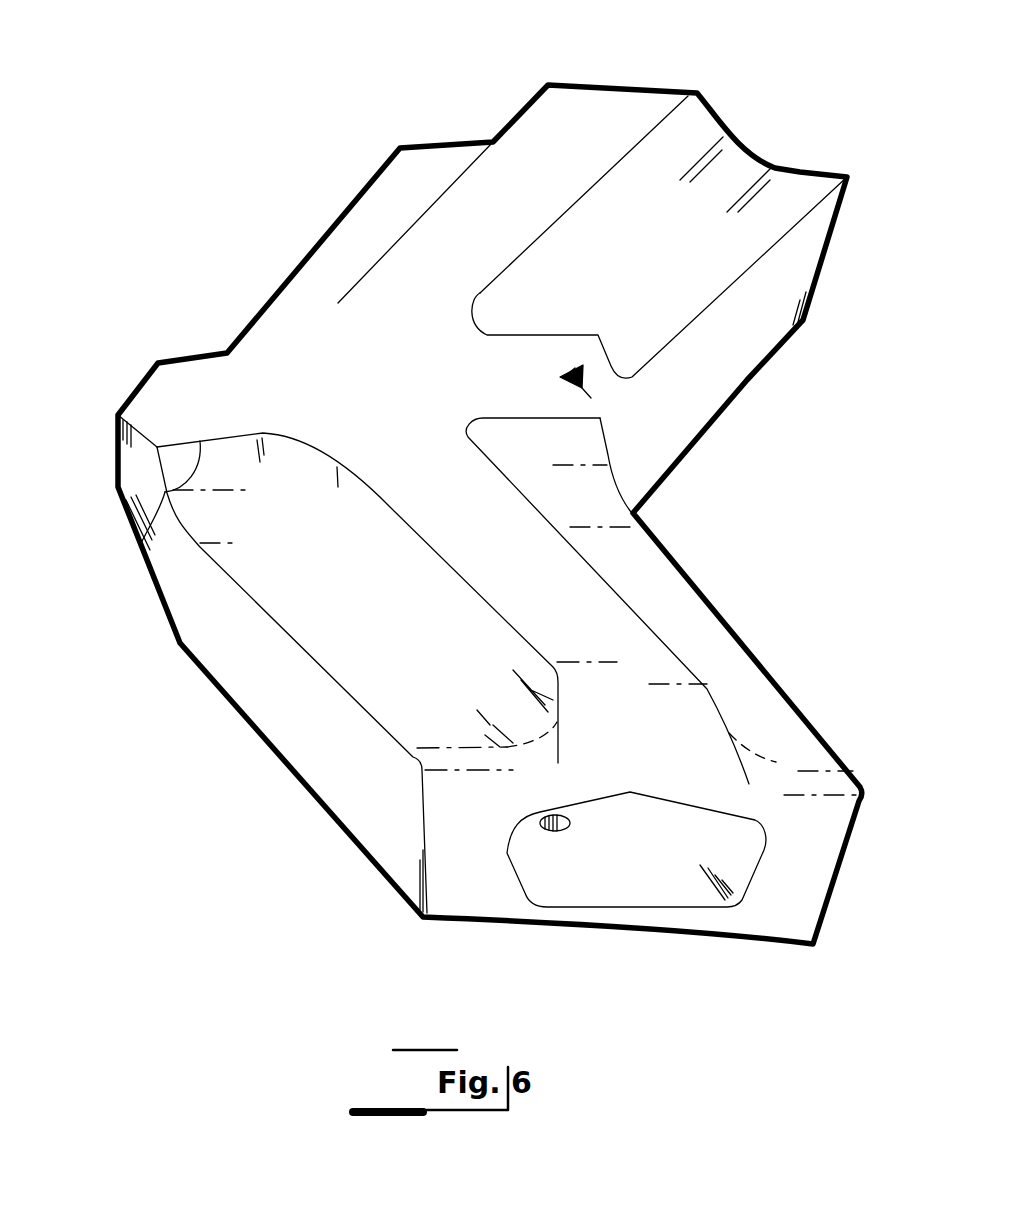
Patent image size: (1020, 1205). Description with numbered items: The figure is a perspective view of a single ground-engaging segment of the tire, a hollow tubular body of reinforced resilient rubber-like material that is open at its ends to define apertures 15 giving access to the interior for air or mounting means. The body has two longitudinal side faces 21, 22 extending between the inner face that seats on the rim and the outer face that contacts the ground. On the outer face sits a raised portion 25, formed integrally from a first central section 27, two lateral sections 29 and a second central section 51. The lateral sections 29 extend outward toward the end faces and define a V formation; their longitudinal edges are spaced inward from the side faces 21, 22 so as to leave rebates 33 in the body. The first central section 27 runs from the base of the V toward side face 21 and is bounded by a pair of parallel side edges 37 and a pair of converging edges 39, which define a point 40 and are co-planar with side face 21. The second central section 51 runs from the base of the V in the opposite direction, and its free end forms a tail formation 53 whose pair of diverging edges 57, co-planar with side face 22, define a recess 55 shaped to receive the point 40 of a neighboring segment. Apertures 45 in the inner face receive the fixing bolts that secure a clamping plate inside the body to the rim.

The aperture 15 is at (684, 893).
The longitudinal side face 21 is at (300, 745).
The longitudinal side face 22 is at (791, 283).
The raised portion 25 is at (372, 313).
The first central section 27 is at (200, 378).
The lateral section 29 is at (542, 132).
The rebate 33 is at (370, 227).
The parallel side edge 37 is at (203, 353).
The converging edge 39 is at (147, 384).
The point 40 is at (118, 415).
The aperture 45 is at (555, 833).
The second central section 51 is at (547, 353).
The tail formation 53 is at (566, 368).
The recess 55 is at (603, 425).
The diverging edge 57 is at (575, 355).